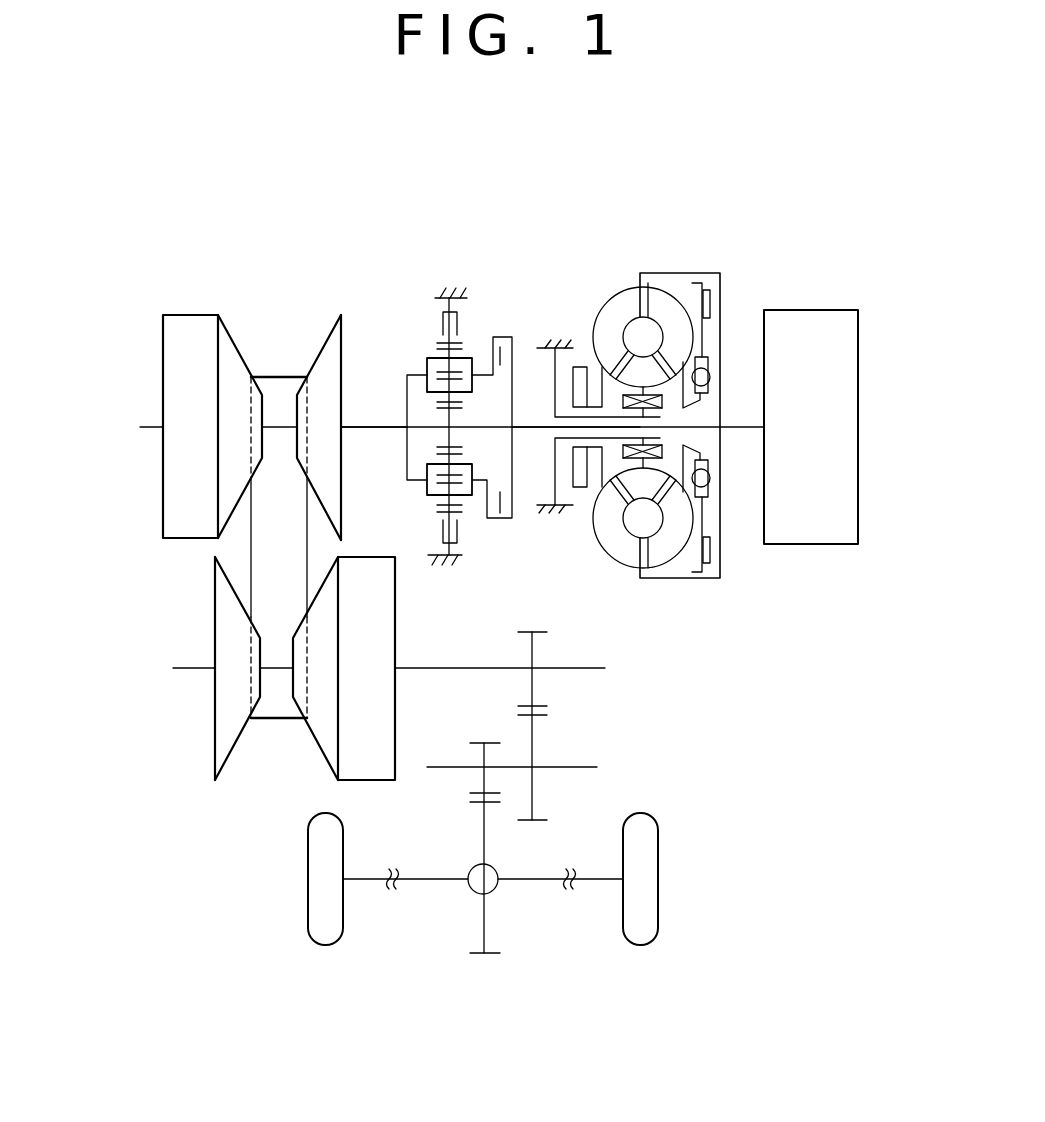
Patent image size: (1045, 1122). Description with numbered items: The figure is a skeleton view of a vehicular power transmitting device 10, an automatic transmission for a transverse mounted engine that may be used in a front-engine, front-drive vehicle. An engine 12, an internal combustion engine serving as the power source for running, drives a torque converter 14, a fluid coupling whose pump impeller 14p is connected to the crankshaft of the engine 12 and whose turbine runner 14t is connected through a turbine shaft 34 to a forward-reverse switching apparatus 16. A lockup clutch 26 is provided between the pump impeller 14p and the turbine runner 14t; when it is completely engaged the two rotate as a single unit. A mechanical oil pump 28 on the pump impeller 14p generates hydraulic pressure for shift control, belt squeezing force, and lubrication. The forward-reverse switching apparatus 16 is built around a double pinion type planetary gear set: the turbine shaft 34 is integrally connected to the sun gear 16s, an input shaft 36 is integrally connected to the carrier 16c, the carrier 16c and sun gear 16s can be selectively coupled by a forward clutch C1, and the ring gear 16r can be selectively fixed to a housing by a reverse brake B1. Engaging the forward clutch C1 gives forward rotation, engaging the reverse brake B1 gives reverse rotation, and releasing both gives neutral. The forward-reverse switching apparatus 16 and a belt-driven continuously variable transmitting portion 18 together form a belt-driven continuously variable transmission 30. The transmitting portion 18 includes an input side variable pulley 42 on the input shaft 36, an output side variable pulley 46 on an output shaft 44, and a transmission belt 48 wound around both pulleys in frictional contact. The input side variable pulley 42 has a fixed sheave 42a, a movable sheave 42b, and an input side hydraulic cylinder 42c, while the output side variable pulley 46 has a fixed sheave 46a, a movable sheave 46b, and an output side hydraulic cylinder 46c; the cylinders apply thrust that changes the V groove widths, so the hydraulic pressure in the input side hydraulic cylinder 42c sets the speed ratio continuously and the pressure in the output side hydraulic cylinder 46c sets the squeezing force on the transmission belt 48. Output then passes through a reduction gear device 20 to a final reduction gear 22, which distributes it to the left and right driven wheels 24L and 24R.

The vehicular power transmitting device 10 is at (803, 262).
The engine 12 is at (815, 544).
The torque converter 14 is at (655, 247).
The pump impeller 14p is at (605, 543).
The turbine runner 14t is at (661, 560).
The forward-reverse switching apparatus 16 is at (417, 285).
The carrier 16c is at (428, 365).
The sun gear 16s is at (442, 443).
The ring gear 16r is at (437, 522).
The belt-driven continuously variable transmitting portion 18 is at (243, 803).
The reduction gear device 20 is at (620, 735).
The final reduction gear 22 is at (470, 890).
The left driven wheel 24L is at (337, 925).
The right driven wheel 24R is at (650, 909).
The lockup clutch 26 is at (710, 297).
The mechanical oil pump 28 is at (582, 367).
The belt-driven continuously variable transmission 30 is at (347, 255).
The turbine shaft 34 is at (530, 432).
The input shaft 36 is at (368, 425).
The input side variable pulley 42 is at (177, 553).
The fixed sheave 42a is at (330, 337).
The movable sheave 42b is at (228, 342).
The input side hydraulic cylinder 42c is at (167, 340).
The output shaft 44 is at (467, 670).
The output side variable pulley 46 is at (203, 795).
The fixed sheave 46a is at (215, 722).
The movable sheave 46b is at (318, 730).
The output side hydraulic cylinder 46c is at (395, 616).
The transmission belt 48 is at (283, 375).
The reverse brake B1 is at (429, 326).
The forward clutch C1 is at (494, 409).